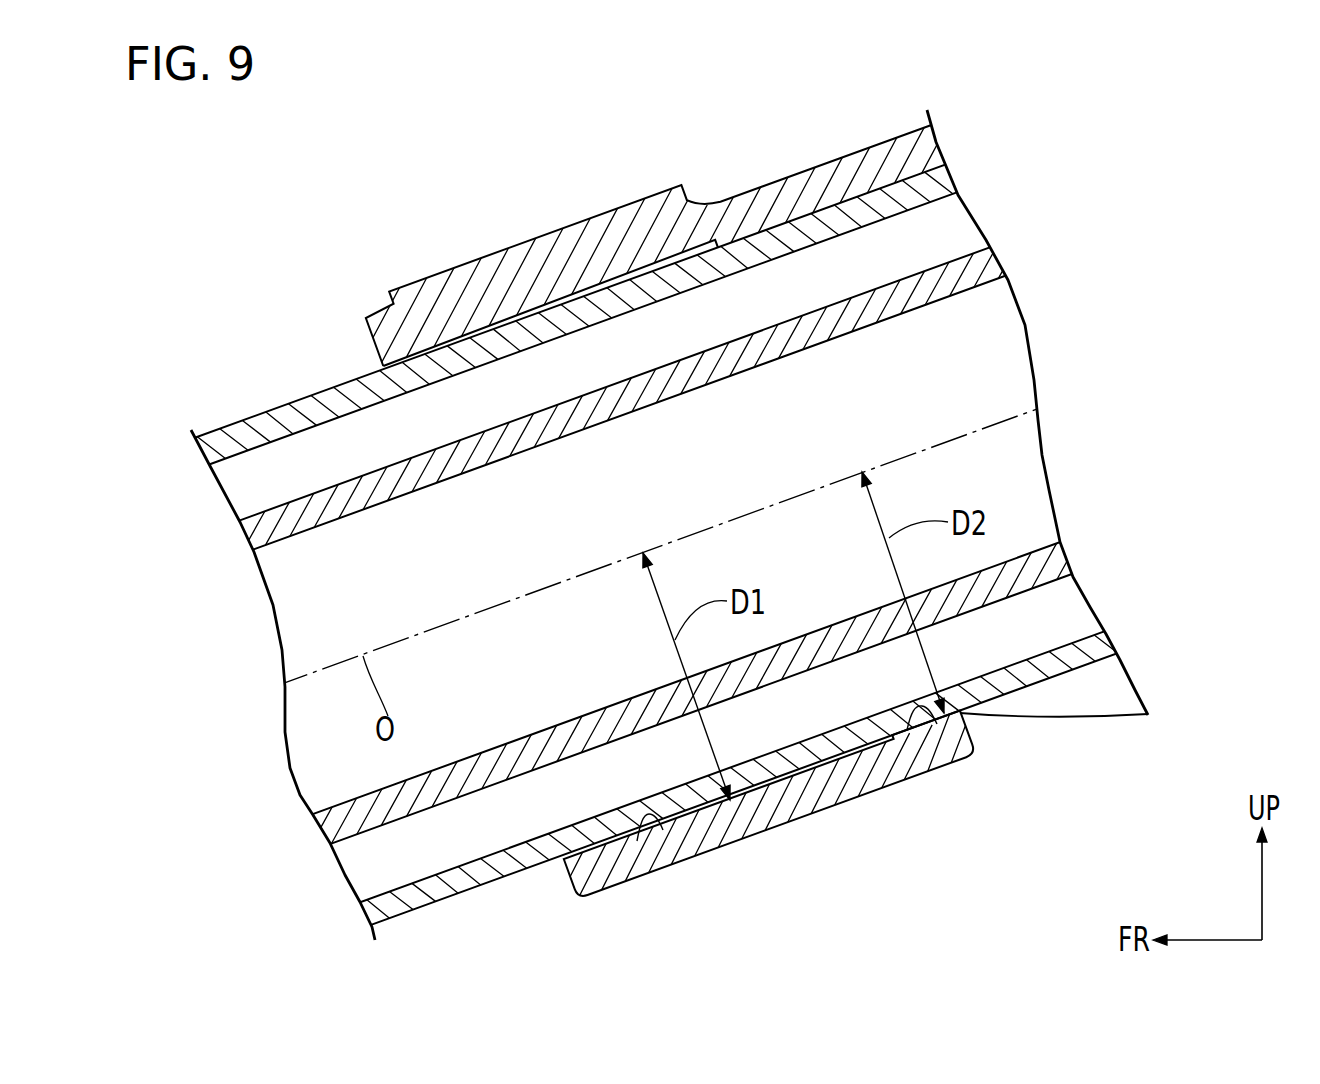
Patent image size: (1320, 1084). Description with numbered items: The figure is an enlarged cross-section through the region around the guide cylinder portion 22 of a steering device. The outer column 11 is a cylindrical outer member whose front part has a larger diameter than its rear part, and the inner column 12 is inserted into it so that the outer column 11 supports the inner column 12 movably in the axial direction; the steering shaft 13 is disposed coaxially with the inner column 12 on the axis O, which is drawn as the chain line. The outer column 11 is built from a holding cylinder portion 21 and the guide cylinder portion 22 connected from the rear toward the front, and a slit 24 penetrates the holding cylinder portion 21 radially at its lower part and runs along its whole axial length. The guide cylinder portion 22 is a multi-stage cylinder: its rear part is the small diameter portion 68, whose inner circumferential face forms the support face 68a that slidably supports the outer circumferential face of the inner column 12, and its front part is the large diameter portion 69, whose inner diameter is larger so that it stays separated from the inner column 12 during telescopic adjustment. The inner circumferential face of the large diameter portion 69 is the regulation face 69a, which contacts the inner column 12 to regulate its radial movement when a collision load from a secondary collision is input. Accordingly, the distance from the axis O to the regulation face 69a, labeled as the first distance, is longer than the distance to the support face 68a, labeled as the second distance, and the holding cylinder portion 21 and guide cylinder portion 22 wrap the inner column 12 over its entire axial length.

The outer column 11 is at (846, 152).
The inner column 12 is at (498, 875).
The steering shaft 13 is at (487, 765).
The holding cylinder portion 21 is at (934, 152).
The guide cylinder portion 22 is at (742, 848).
The slit 24 is at (1013, 713).
The small diameter portion 68 is at (915, 765).
The support face 68a is at (937, 724).
The large diameter portion 69 is at (800, 812).
The regulation face 69a is at (663, 830).